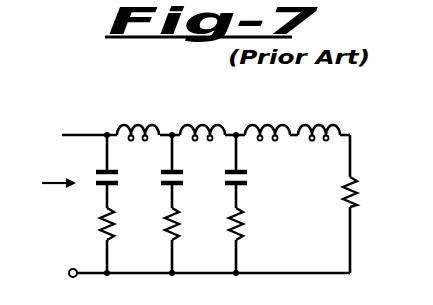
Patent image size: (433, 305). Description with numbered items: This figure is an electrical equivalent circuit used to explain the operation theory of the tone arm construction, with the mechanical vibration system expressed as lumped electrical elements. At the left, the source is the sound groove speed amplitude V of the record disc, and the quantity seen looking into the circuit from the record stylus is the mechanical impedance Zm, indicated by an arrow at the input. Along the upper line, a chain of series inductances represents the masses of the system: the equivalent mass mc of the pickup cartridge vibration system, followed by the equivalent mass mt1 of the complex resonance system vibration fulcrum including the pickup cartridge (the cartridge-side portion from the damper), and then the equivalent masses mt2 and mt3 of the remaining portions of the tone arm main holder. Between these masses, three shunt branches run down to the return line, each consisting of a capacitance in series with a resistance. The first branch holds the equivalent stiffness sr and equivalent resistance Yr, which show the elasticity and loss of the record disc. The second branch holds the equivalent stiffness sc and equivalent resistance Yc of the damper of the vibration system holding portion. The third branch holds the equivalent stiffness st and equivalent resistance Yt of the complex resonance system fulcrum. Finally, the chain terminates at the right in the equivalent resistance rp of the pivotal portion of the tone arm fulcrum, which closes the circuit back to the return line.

The sound groove speed amplitude V is at (38, 138).
The mechanical impedance Zm is at (56, 200).
The equivalent mass of the pickup cartridge vibration system mc is at (138, 115).
The equivalent mass of the complex resonance system vibration fulcrum mt1 is at (210, 115).
The equivalent mass of a portion of the tone arm main holder mt2 is at (274, 115).
The equivalent mass of a portion of the tone arm main holder mt3 is at (328, 116).
The equivalent stiffness of the record disc sr is at (117, 191).
The equivalent stiffness of the damper of the vibration system holding portion sc is at (183, 191).
The equivalent stiffness of the complex resonance system fulcrum st is at (247, 191).
The equivalent resistance of the record disc Yr is at (120, 238).
The equivalent resistance of the damper of the vibration system holding portion Yc is at (186, 238).
The equivalent resistance of the complex resonance system fulcrum Yt is at (250, 238).
The equivalent resistance of the pivotal portion of the tone arm fulcrum rp is at (368, 196).